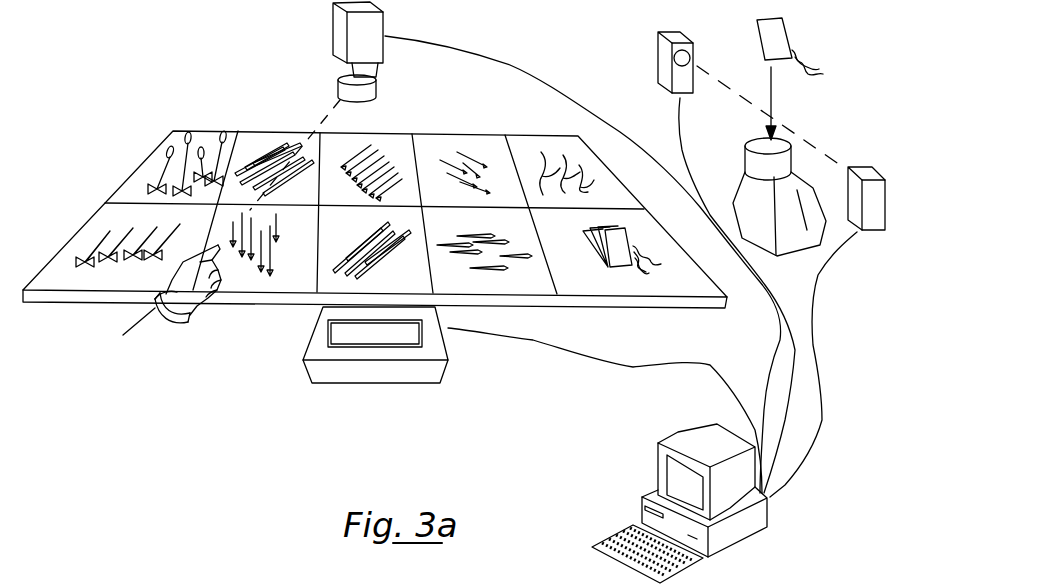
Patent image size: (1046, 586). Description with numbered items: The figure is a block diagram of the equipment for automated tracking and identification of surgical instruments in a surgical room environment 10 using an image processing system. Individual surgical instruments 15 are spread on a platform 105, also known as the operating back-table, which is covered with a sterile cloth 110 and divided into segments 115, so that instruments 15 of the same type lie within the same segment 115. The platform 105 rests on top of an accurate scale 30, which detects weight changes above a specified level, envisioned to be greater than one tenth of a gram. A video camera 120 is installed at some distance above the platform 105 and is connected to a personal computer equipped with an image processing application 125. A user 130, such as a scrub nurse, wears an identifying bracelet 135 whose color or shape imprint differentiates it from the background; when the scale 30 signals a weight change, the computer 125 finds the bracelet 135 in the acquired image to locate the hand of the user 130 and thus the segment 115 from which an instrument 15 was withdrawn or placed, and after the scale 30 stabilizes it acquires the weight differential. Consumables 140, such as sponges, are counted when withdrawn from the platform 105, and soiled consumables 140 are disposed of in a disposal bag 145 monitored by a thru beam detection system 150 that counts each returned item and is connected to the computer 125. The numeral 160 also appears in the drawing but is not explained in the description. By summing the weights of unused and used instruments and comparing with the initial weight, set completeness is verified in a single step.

The surgical room environment 10 is at (152, 103).
The individual surgical instrument 15 is at (165, 168).
The accurate scale 30 is at (305, 362).
The platform 105 is at (88, 296).
The sterile cloth 110 is at (127, 212).
The segments 115 is at (428, 147).
The video camera 120 is at (333, 36).
The personal computer equipped with an image processing application 125 is at (658, 463).
The user 130 is at (200, 295).
The identifying bracelet 135 is at (167, 330).
The consumables 140 is at (780, 40).
The disposal bag 145 is at (807, 232).
The thru beam detection system 150 is at (660, 33).
The workstation 160 is at (259, 579).